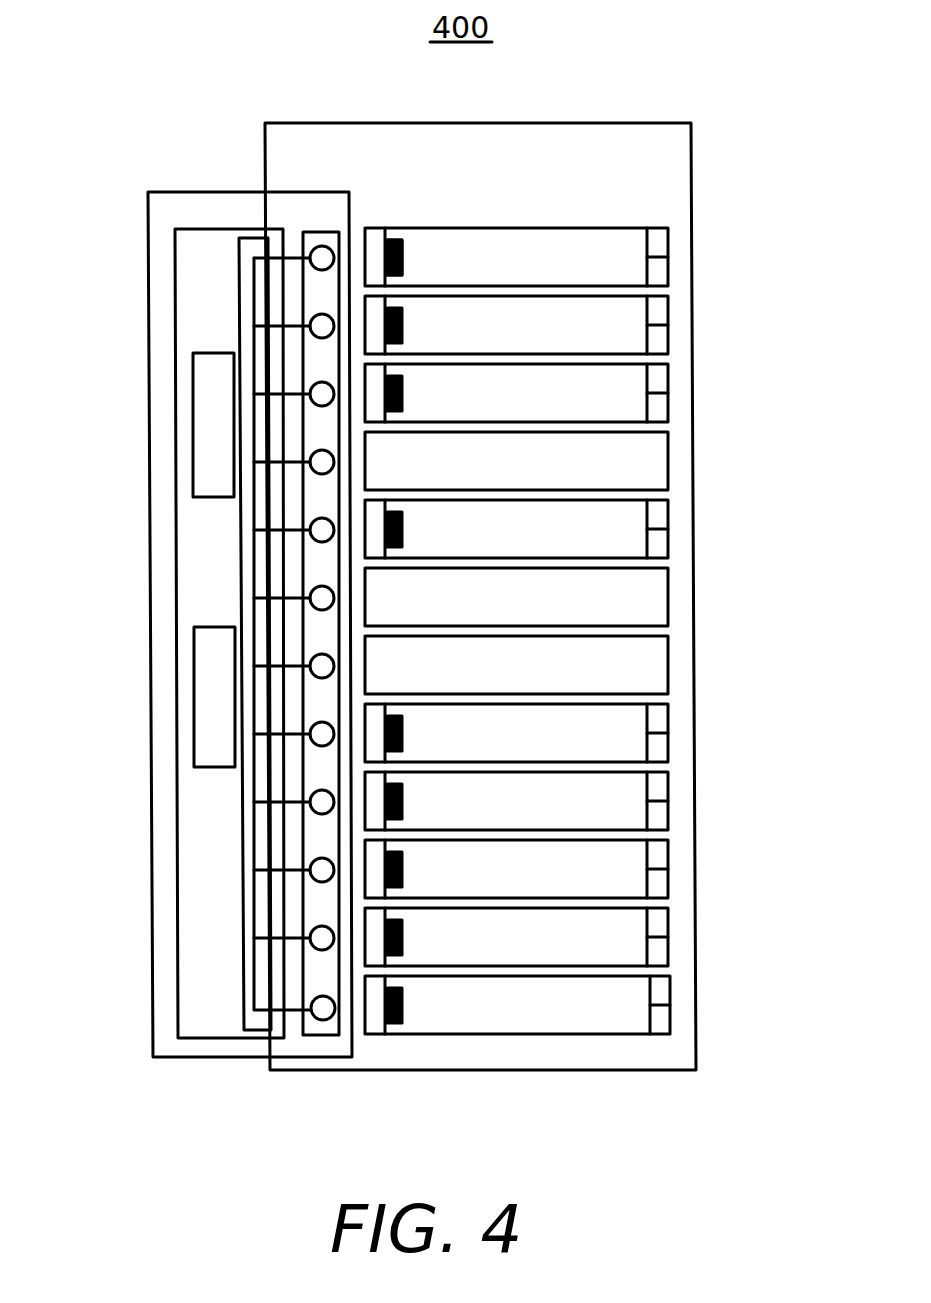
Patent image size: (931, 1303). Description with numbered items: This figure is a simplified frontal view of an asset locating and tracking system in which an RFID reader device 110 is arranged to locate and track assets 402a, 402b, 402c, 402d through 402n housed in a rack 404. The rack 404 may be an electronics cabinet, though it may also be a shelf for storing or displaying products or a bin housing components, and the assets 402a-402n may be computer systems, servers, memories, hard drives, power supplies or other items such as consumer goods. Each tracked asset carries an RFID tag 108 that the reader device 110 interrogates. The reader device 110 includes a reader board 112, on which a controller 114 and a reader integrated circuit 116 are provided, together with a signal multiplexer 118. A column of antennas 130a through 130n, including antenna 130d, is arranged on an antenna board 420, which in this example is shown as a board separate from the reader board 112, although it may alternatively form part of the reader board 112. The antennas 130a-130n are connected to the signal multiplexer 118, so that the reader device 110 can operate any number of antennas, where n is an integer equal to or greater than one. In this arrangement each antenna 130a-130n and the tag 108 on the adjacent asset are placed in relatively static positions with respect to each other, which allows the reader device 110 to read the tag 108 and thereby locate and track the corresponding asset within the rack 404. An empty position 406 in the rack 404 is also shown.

The rack 404 is at (692, 158).
The asset 402a is at (668, 252).
The asset 402b is at (668, 322).
The asset 402c is at (668, 388).
The asset 402d is at (668, 525).
The asset 402n is at (672, 1005).
The empty slot 406 is at (668, 658).
The RFID tag 108 is at (402, 257).
The RFID reader device 110 is at (200, 192).
The reader board 112 is at (175, 300).
The controller 114 is at (193, 418).
The reader integrated circuit 116 is at (194, 680).
The signal multiplexer 118 is at (241, 826).
The antenna board 420 is at (318, 1036).
The antenna 130a is at (330, 246).
The antenna 130d is at (334, 458).
The antenna 130n is at (324, 1036).